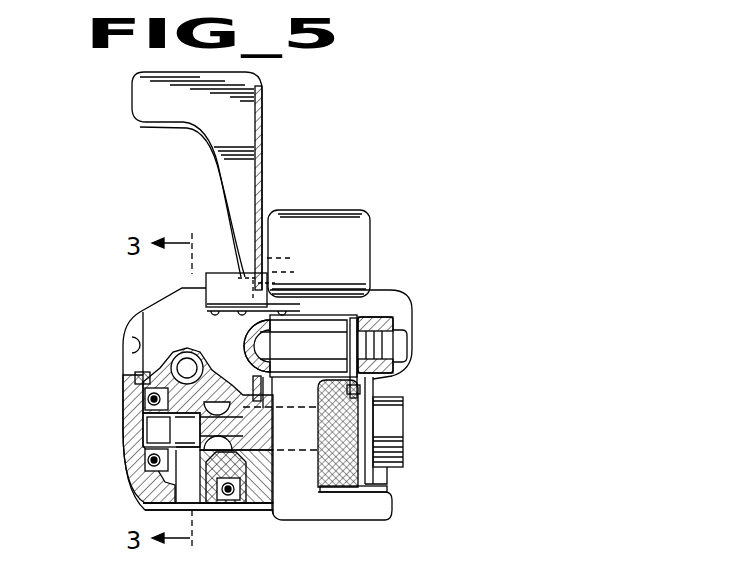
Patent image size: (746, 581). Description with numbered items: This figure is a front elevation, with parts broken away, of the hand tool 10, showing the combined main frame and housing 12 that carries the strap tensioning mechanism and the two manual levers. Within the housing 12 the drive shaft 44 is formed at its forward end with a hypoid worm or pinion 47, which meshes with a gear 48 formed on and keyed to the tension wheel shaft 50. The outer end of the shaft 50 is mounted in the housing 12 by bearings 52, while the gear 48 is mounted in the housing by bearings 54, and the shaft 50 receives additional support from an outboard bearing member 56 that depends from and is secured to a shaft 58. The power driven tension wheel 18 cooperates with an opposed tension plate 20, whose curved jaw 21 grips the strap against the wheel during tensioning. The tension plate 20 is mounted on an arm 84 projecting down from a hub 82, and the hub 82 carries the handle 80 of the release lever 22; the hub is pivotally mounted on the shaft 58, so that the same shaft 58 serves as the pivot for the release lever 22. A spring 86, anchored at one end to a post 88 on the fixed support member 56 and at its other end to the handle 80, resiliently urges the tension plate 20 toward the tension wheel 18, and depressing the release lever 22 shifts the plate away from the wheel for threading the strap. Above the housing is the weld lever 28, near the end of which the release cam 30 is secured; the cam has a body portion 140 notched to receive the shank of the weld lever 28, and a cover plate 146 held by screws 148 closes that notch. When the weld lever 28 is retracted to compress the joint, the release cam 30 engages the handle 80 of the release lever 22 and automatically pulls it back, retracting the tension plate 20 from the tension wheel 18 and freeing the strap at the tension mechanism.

The tool 10 is at (121, 166).
The combined main frame and housing 12 is at (155, 323).
The tension wheel 18 is at (372, 467).
The tension plate 20 is at (351, 505).
The curved jaw 21 is at (385, 489).
The release lever 22 is at (263, 181).
The weld lever 28 is at (362, 212).
The release cam 30 is at (216, 282).
The drive shaft 44 is at (190, 374).
The hypoid worm or pinion 47 is at (146, 378).
The gear 48 is at (201, 505).
The tension wheel shaft 50 is at (160, 430).
The bearings 52 is at (148, 399).
The bearings 54 is at (243, 505).
The outboard bearing member 56 is at (403, 400).
The shaft 58 is at (407, 341).
The handle 80 is at (258, 156).
The hub 82 is at (320, 318).
The arm 84 is at (311, 484).
The spring 86 is at (394, 318).
The post 88 is at (361, 389).
The body portion 140 is at (265, 284).
The cover plate 146 is at (239, 313).
The screws 148 is at (213, 313).